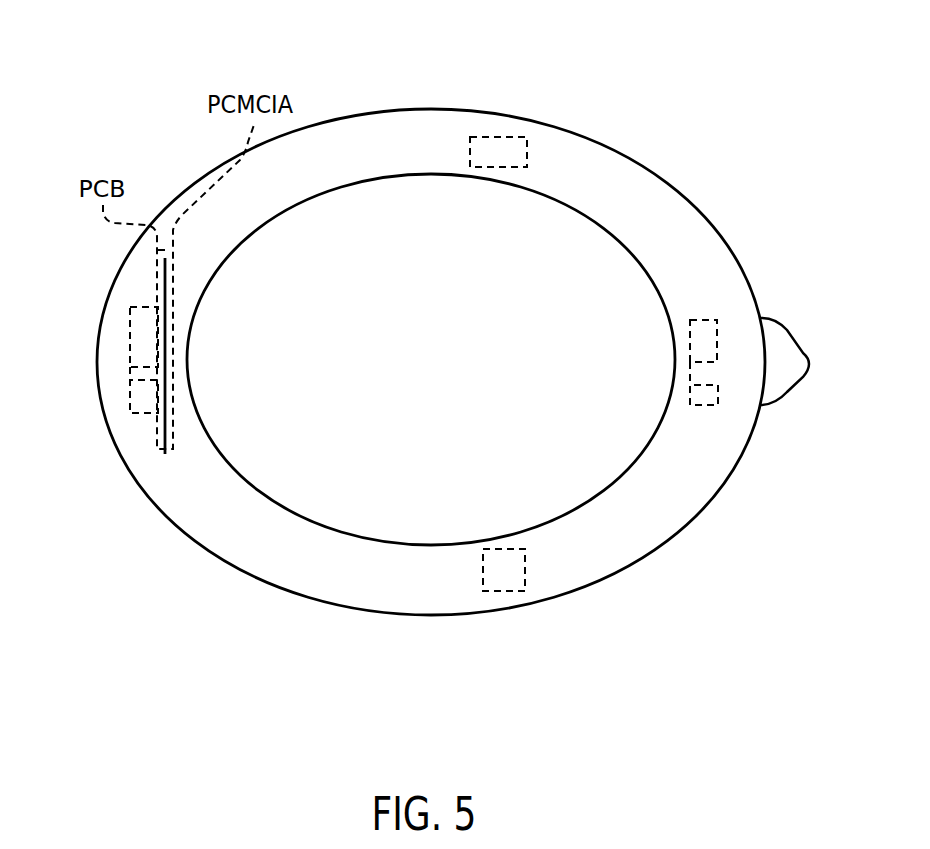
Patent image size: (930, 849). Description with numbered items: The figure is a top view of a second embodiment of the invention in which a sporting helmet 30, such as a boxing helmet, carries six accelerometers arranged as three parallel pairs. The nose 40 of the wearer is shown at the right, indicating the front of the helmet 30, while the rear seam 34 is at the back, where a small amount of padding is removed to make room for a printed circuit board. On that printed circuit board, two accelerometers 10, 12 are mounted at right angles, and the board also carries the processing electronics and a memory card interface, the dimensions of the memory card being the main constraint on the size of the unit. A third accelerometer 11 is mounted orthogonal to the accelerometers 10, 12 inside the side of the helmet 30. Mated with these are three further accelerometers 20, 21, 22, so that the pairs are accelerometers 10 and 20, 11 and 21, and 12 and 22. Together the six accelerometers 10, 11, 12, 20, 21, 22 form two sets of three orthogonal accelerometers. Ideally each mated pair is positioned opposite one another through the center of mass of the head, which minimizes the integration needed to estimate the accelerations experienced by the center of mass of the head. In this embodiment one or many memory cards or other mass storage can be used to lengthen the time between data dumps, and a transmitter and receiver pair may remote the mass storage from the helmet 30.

The accelerometer 10 is at (137, 416).
The third accelerometer 11 is at (506, 592).
The accelerometer 12 is at (146, 307).
The accelerometer 20 is at (707, 406).
The accelerometer 21 is at (485, 137).
The accelerometer 22 is at (707, 318).
The helmet 30 is at (620, 150).
The rear seam 34 is at (97, 363).
The nose 40 is at (798, 338).